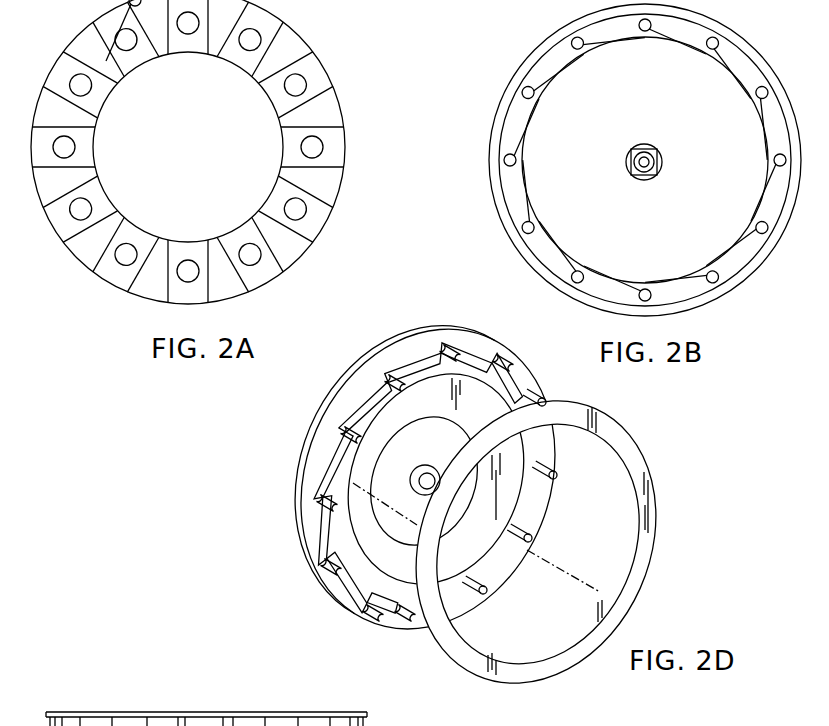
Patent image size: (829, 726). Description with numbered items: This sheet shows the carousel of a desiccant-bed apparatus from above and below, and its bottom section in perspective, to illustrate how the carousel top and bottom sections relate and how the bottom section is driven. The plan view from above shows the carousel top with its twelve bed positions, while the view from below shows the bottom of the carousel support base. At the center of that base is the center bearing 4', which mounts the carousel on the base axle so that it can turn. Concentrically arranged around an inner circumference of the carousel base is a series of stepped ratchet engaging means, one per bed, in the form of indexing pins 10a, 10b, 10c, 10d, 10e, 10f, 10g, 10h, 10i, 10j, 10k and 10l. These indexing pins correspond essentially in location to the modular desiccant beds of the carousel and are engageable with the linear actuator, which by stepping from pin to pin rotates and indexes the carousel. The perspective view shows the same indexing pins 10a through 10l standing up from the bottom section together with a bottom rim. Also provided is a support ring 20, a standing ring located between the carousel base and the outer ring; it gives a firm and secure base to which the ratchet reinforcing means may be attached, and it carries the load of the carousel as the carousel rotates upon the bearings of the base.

In FIG. 2B, the indexing pin 10a is at (536, 228).
In FIG. 2D, the indexing pin 10a is at (323, 566).
In FIG. 2B, the indexing pin 10b is at (581, 272).
In FIG. 2D, the indexing pin 10b is at (358, 614).
In FIG. 2B, the indexing pin 10c is at (650, 269).
In FIG. 2D, the indexing pin 10c is at (409, 616).
In FIG. 2B, the indexing pin 10d is at (700, 268).
In FIG. 2D, the indexing pin 10d is at (487, 591).
In FIG. 2B, the indexing pin 10e is at (752, 224).
In FIG. 2D, the indexing pin 10e is at (532, 537).
In FIG. 2B, the indexing pin 10f is at (772, 162).
In FIG. 2D, the indexing pin 10f is at (557, 475).
In FIG. 2B, the indexing pin 10g is at (753, 107).
In FIG. 2D, the indexing pin 10g is at (540, 396).
In FIG. 2B, the indexing pin 10h is at (713, 50).
In FIG. 2D, the indexing pin 10h is at (508, 355).
In FIG. 2B, the indexing pin 10i is at (648, 41).
In FIG. 2D, the indexing pin 10i is at (455, 350).
In FIG. 2B, the indexing pin 10j is at (580, 50).
In FIG. 2D, the indexing pin 10j is at (390, 372).
In FIG. 2B, the indexing pin 10k is at (537, 100).
In FIG. 2D, the indexing pin 10k is at (341, 430).
In FIG. 2B, the indexing pin 10l is at (520, 163).
In FIG. 2D, the indexing pin 10l is at (314, 496).
In FIG. 2B, the support ring 20 is at (661, 42).
In FIG. 2B, the center bearing 4' is at (653, 180).